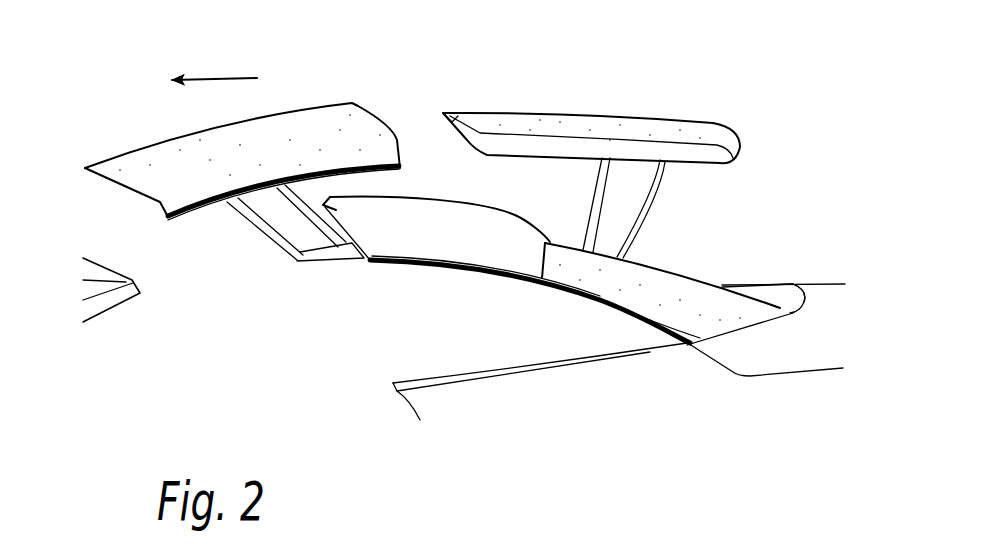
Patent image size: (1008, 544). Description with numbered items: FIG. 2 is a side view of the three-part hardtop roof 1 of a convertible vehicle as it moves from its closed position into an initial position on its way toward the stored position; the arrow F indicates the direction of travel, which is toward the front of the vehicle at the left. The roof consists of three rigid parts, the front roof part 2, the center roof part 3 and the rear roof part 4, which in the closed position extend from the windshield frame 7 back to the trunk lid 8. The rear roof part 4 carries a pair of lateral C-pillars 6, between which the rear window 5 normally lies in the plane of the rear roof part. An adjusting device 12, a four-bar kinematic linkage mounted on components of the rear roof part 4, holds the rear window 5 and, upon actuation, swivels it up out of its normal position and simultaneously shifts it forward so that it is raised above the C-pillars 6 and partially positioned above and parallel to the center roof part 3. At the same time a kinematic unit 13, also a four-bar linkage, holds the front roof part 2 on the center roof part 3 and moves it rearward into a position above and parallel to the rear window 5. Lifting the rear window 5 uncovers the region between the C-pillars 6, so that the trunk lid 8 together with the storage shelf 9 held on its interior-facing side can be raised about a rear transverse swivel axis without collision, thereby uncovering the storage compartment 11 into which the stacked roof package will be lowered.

The direction of flight / airflow force F is at (214, 53).
The hardtop roof 1 is at (112, 138).
The front roof part 2 is at (296, 116).
The center roof part 3 is at (426, 212).
The rear roof part 4 is at (704, 251).
The rear window 5 is at (644, 122).
The C-pillars 6 is at (592, 288).
The windshield frame 7 is at (128, 293).
The trunk lid 8 is at (824, 292).
The storage shelf 9 is at (774, 287).
The storage compartment 11 is at (752, 362).
The adjusting device 12 is at (590, 192).
The kinematic unit 13 is at (264, 243).